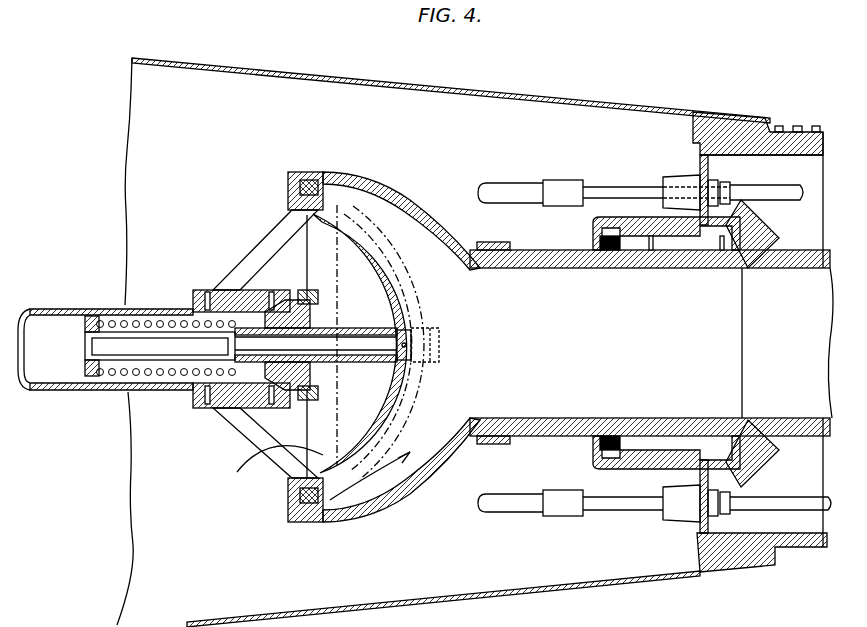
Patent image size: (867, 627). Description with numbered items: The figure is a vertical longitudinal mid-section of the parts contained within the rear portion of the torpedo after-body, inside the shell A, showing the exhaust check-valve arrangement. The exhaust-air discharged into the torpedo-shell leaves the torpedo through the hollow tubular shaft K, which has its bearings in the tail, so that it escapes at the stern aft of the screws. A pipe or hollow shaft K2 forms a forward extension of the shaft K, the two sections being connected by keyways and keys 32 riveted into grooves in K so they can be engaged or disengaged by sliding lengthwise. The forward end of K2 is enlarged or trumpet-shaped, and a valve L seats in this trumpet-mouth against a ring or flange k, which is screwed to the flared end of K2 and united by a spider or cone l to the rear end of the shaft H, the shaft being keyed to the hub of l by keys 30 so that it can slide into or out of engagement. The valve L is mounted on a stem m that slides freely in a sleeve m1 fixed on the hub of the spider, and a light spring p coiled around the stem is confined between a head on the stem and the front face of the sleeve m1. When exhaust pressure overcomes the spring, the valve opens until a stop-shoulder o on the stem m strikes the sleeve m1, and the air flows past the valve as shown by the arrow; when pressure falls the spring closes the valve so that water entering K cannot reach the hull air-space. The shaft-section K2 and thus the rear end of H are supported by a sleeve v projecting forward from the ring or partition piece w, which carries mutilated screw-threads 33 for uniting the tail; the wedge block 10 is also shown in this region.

The housing A is at (443, 342).
The shaft H is at (158, 394).
The keys 30 is at (245, 292).
The spring p is at (118, 322).
The stop-shoulder o is at (167, 346).
The stem m is at (337, 345).
The sleeve m1 is at (308, 346).
The spider or cone l is at (216, 289).
The ring or flange k is at (292, 494).
The valve L is at (387, 405).
The hollow shaft K2 is at (576, 347).
The tubular shaft K is at (765, 352).
The mutilated screw-threads 33 is at (758, 123).
The keys 32 is at (702, 262).
The ring or partition piece w is at (705, 160).
The sleeve v is at (654, 486).
The wedge block 10 is at (770, 462).